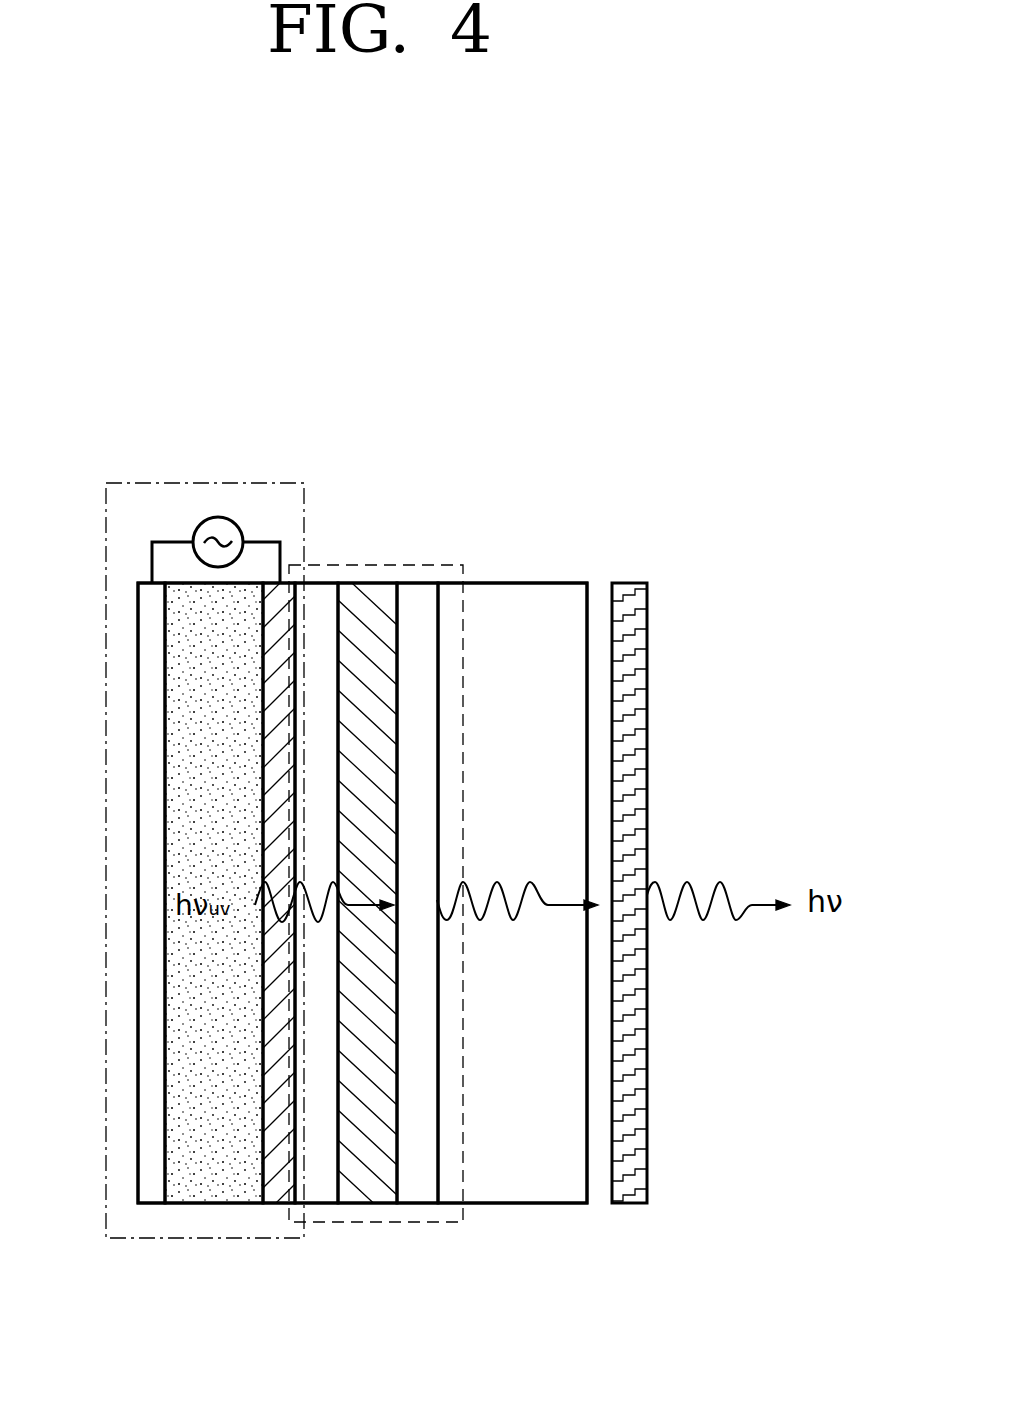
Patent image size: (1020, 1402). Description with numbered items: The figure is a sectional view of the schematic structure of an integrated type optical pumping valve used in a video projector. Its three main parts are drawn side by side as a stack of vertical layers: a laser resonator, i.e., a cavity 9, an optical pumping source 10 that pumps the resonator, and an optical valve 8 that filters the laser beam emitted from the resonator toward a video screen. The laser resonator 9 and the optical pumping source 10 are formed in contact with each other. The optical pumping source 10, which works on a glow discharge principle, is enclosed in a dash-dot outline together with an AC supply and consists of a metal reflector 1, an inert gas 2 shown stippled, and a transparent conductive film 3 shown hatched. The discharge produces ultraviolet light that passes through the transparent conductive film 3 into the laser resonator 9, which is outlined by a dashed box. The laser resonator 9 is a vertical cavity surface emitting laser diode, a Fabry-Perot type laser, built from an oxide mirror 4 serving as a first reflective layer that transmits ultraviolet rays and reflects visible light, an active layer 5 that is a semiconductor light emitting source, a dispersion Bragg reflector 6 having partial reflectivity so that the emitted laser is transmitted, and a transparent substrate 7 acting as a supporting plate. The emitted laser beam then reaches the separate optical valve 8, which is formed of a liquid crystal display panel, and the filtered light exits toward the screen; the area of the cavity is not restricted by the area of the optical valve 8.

The metal reflector 1 is at (147, 1197).
The inert gas 2 is at (205, 1197).
The transparent conductive film 3 is at (285, 1190).
The oxide mirror 4 is at (320, 1197).
The active layer 5 is at (368, 1197).
The dispersion Bragg reflector 6 is at (420, 1197).
The transparent substrate 7 is at (522, 1197).
The optical valve 8 is at (625, 1203).
The laser resonator 9 is at (397, 565).
The optical pumping source 10 is at (213, 482).